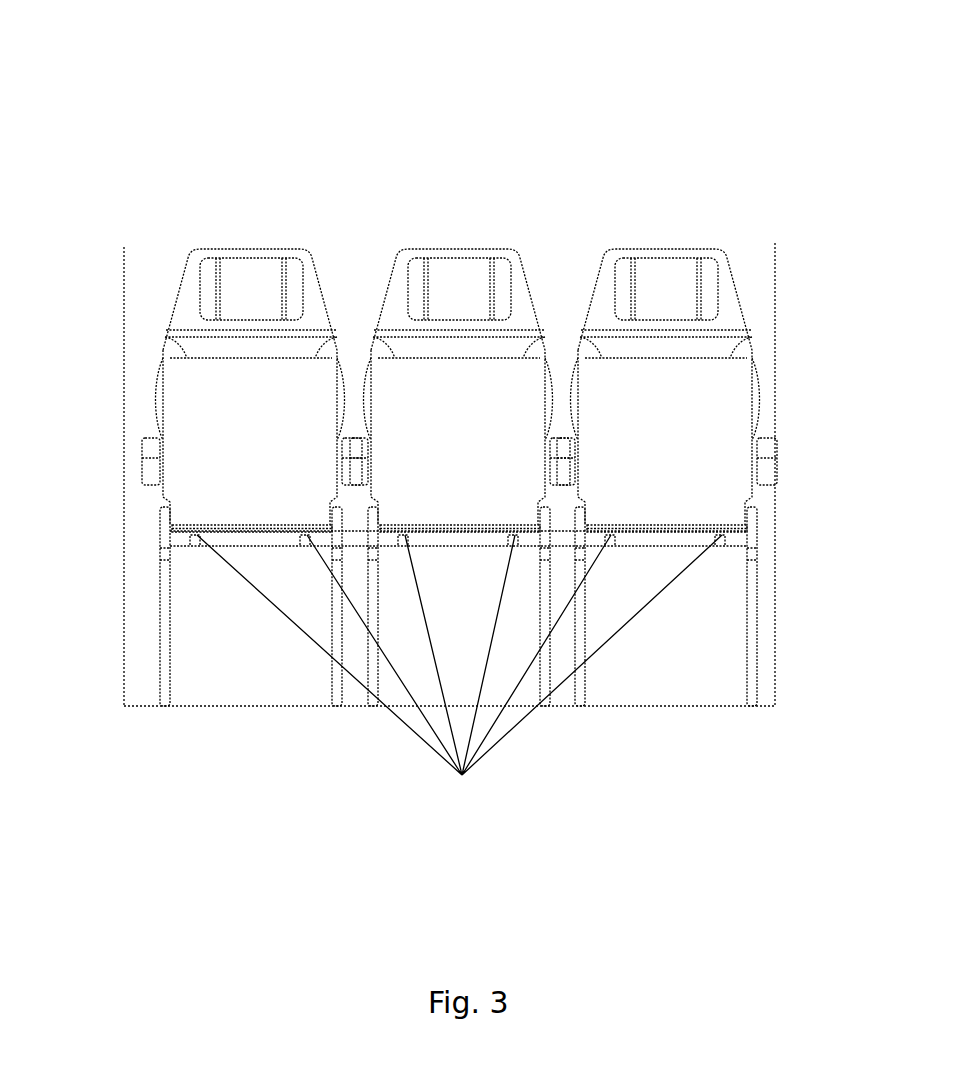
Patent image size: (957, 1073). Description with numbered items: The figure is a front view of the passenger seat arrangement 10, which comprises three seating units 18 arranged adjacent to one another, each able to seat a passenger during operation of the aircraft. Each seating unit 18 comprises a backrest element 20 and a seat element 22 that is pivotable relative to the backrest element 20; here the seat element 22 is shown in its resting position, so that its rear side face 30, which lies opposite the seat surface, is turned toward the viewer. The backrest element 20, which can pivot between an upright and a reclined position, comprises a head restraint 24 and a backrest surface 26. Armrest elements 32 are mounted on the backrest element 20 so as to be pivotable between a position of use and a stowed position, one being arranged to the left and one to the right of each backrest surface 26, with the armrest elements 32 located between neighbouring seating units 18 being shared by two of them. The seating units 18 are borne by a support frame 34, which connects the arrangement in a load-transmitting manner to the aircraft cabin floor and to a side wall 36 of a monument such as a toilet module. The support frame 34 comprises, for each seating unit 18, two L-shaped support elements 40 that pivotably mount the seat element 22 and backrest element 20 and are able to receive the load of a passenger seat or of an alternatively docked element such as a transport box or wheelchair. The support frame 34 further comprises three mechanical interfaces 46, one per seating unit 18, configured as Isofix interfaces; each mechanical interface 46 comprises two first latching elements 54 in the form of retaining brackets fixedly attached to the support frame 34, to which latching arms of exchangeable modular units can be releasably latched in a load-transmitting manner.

The passenger seat arrangement 10 is at (133, 212).
The seating unit 18 is at (493, 267).
The backrest element 20 is at (693, 350).
The seat element 22 is at (702, 387).
The head restraint 24 is at (666, 244).
The backrest surface 26 is at (712, 321).
The rear side face 30 is at (645, 384).
The armrest element 32 is at (800, 433).
The support frame 34 is at (766, 578).
The side wall 36 is at (140, 653).
The support element 40 is at (750, 711).
The mechanical interface 46 is at (722, 555).
The first latching element 54 is at (459, 673).